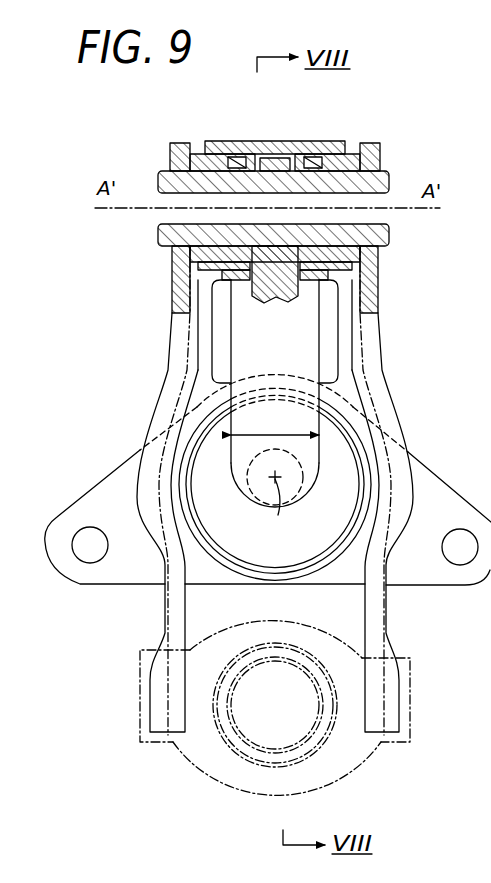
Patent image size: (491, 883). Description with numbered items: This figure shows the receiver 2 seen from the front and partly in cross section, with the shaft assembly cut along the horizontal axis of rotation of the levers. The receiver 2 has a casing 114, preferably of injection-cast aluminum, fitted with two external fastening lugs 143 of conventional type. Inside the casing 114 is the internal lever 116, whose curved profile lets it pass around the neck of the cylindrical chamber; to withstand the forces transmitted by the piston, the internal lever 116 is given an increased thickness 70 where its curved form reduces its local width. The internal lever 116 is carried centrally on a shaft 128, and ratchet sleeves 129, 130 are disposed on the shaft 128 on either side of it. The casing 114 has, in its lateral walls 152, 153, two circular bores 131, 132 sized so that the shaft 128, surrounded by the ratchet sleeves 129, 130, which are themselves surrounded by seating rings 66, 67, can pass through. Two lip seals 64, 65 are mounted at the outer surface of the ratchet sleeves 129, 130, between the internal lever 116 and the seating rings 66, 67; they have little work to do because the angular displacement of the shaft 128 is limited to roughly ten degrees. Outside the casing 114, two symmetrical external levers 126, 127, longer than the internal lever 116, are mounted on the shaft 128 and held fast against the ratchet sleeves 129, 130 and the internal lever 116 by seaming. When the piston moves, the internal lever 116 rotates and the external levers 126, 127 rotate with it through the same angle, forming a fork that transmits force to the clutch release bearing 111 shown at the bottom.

The receiver 2 is at (449, 226).
The lip seal 64 is at (248, 154).
The lip seal 65 is at (300, 158).
The seating ring 66 is at (197, 145).
The seating ring 67 is at (353, 146).
The increased thickness 70 is at (270, 433).
The clutch release bearing 111 is at (220, 780).
The casing 114 is at (189, 368).
The internal lever 116 is at (292, 353).
The external lever 126 is at (160, 415).
The external lever 127 is at (392, 415).
The shaft 128 is at (391, 193).
The ratchet sleeve 129 is at (217, 141).
The ratchet sleeve 130 is at (322, 146).
The circular bore 131 is at (190, 262).
The circular bore 132 is at (380, 274).
The external fastening lug 143 is at (110, 493).
The lateral wall 152 is at (205, 327).
The lateral wall 153 is at (348, 332).